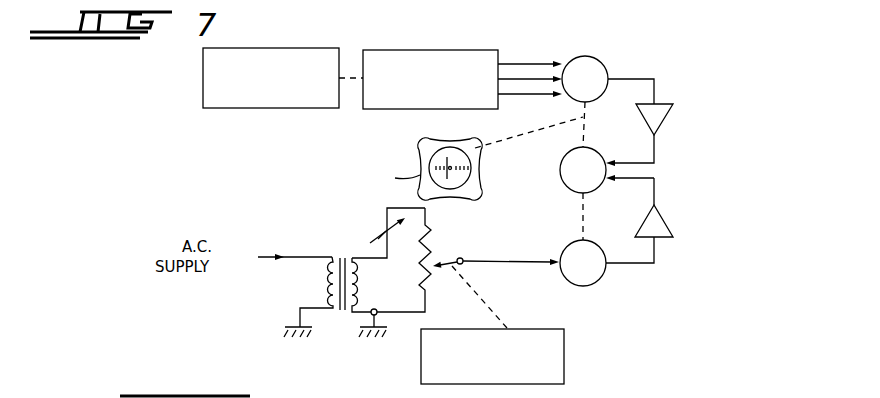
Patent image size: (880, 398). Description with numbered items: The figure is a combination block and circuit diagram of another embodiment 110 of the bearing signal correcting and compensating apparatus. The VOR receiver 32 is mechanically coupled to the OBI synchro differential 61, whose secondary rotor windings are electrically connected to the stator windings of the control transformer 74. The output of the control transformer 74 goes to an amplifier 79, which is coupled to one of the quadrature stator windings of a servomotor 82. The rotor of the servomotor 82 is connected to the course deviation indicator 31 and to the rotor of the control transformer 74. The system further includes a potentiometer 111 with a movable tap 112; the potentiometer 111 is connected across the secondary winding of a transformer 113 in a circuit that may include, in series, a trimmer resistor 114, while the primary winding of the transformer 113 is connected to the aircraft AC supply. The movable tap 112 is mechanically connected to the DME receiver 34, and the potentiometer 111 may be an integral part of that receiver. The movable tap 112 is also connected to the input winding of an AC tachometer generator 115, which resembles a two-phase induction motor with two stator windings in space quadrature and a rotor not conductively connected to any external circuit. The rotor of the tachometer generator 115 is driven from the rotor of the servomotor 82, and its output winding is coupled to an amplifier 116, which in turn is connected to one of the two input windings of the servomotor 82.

The VOR receiver 32 is at (297, 48).
The OBI synchro differential 61 is at (472, 49).
The control transformer 74 is at (607, 72).
The amplifier 79 is at (667, 118).
The servomotor 82 is at (560, 170).
The amplifier 116 is at (660, 213).
The AC tachometer generator 115 is at (600, 277).
The course deviation indicator 31 is at (482, 182).
The bearing signal correcting and compensating apparatus 110 is at (324, 158).
The trimmer resistor 114 is at (385, 223).
The transformer 113 is at (348, 257).
The potentiometer 111 is at (427, 243).
The movable tap 112 is at (452, 267).
The DME receiver 34 is at (564, 360).